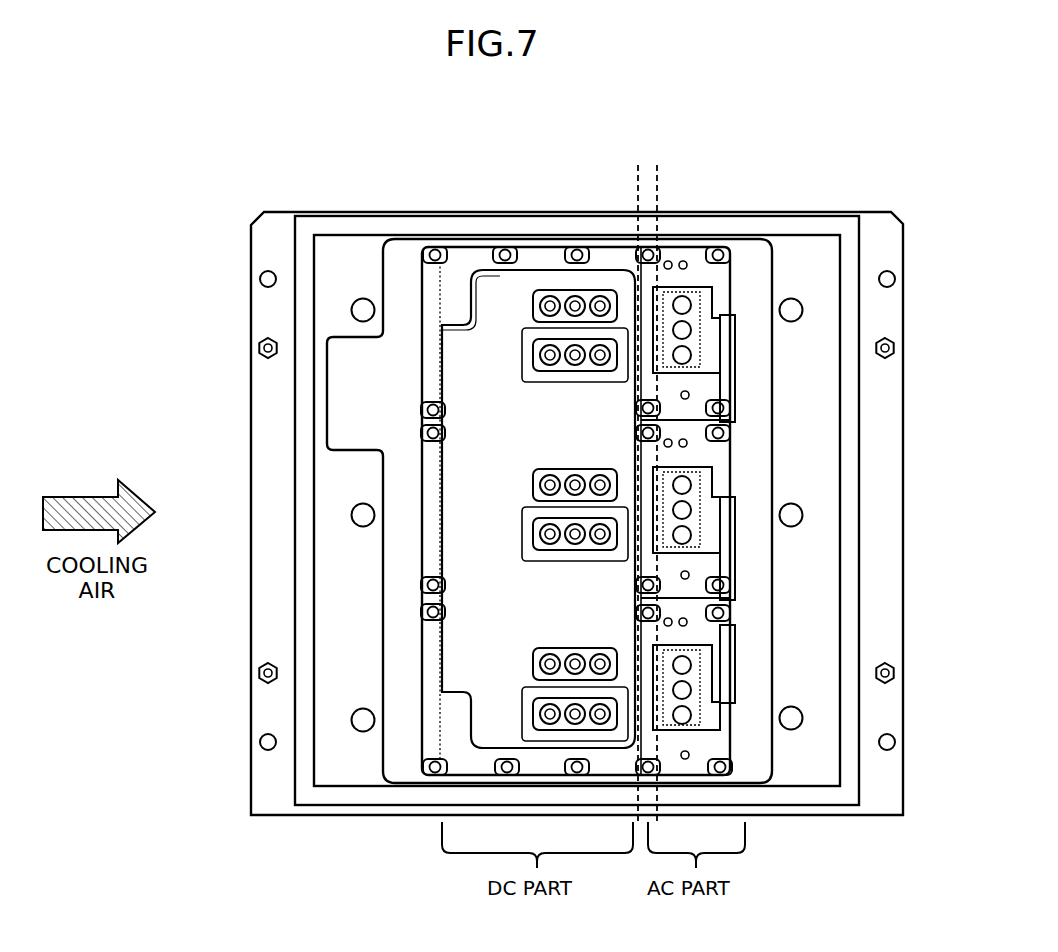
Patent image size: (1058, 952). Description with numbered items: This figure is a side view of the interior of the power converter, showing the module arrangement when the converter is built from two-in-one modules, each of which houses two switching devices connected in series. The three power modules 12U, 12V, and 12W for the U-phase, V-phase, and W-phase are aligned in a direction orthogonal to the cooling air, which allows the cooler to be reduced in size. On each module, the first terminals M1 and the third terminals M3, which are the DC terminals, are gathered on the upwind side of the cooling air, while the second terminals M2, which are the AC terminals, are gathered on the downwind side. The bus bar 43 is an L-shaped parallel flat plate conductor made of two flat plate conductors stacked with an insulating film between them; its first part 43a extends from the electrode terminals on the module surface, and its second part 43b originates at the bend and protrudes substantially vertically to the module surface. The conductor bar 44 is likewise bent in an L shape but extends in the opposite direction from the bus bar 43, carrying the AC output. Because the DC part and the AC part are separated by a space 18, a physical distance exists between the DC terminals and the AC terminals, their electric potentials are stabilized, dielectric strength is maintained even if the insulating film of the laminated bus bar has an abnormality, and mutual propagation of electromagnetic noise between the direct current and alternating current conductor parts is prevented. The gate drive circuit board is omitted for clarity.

The power module 12U is at (423, 293).
The power module 12V is at (423, 563).
The power module 12W is at (423, 640).
The bus bar 43 is at (432, 368).
The first part 43a is at (496, 287).
The second part 43b is at (437, 490).
The conductor bar 44 is at (710, 357).
The first terminal M1 is at (557, 290).
The second terminal M2 is at (690, 290).
The third terminal M3 is at (570, 372).
The space 18 is at (686, 180).